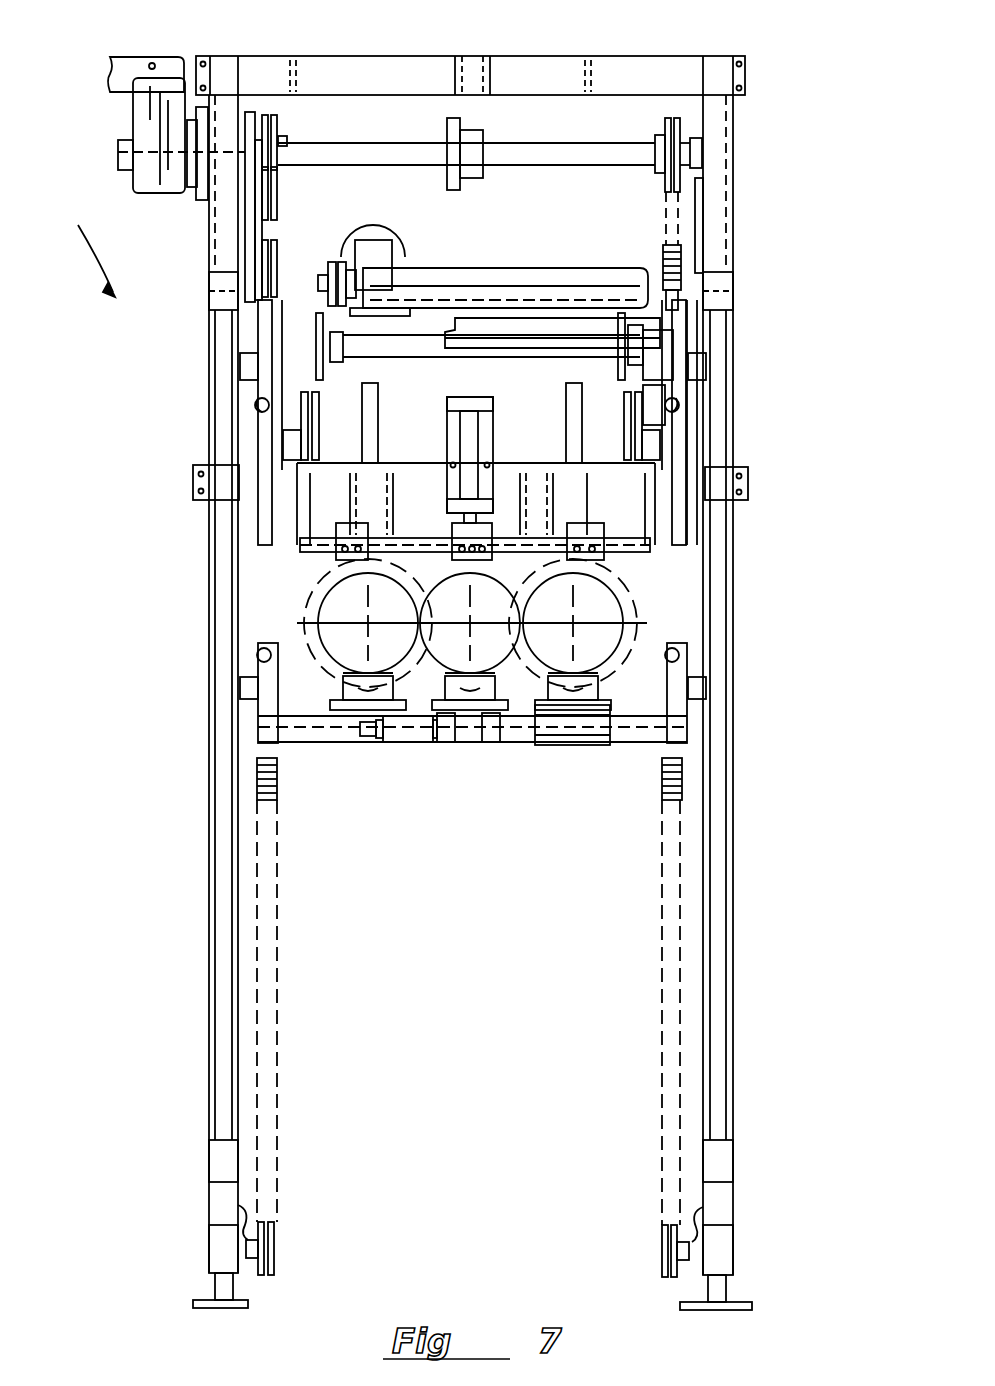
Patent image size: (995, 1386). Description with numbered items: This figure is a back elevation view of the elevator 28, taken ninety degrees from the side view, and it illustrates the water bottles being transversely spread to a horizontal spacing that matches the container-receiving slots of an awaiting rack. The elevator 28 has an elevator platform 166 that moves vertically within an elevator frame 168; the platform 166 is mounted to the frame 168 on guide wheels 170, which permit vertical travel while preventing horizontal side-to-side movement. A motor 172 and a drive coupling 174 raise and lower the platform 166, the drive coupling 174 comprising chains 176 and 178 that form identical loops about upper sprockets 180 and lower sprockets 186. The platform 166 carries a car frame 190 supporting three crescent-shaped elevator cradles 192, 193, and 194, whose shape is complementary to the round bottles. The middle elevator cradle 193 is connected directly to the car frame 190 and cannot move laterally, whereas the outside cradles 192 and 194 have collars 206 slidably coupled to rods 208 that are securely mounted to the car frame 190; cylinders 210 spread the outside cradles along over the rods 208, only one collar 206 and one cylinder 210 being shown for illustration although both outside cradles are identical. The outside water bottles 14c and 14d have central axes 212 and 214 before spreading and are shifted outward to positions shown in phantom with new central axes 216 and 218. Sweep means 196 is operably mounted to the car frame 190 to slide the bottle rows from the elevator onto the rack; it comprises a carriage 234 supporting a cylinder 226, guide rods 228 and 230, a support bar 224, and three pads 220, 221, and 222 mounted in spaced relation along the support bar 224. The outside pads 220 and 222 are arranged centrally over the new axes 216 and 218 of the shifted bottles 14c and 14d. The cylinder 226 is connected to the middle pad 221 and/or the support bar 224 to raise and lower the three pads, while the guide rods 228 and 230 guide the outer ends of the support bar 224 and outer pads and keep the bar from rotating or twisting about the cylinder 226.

The elevator 28 is at (82, 249).
The outside water bottle 14c is at (436, 581).
The outside water bottle 14d is at (557, 592).
The elevator platform 166 is at (742, 610).
The elevator frame 168 is at (722, 775).
The guide wheels 170 is at (262, 400).
The motor 172 is at (133, 63).
The drive coupling 174 is at (187, 204).
The chain 176 is at (279, 1062).
The chain 178 is at (666, 1100).
The upper sprocket 180 is at (272, 128).
The lower sprocket 186 is at (276, 1262).
The car frame 190 is at (674, 463).
The outside elevator cradle 192 is at (372, 740).
The middle elevator cradle 193 is at (467, 744).
The outside elevator cradle 194 is at (590, 712).
The sweep means 196 is at (505, 365).
The collar 206 is at (560, 733).
The rods 208 is at (292, 745).
The cylinder 210 is at (410, 737).
The central axis 212 is at (367, 622).
The central axis 214 is at (574, 622).
The new central axis 216 is at (305, 608).
The new central axis 218 is at (632, 596).
The outside pad 220 is at (340, 527).
The middle pad 221 is at (481, 520).
The outside pad 222 is at (710, 457).
The support bar 224 is at (540, 545).
The cylinder 226 is at (470, 420).
The guide rod 228 is at (372, 407).
The guide rod 230 is at (571, 412).
The carriage 234 is at (668, 412).